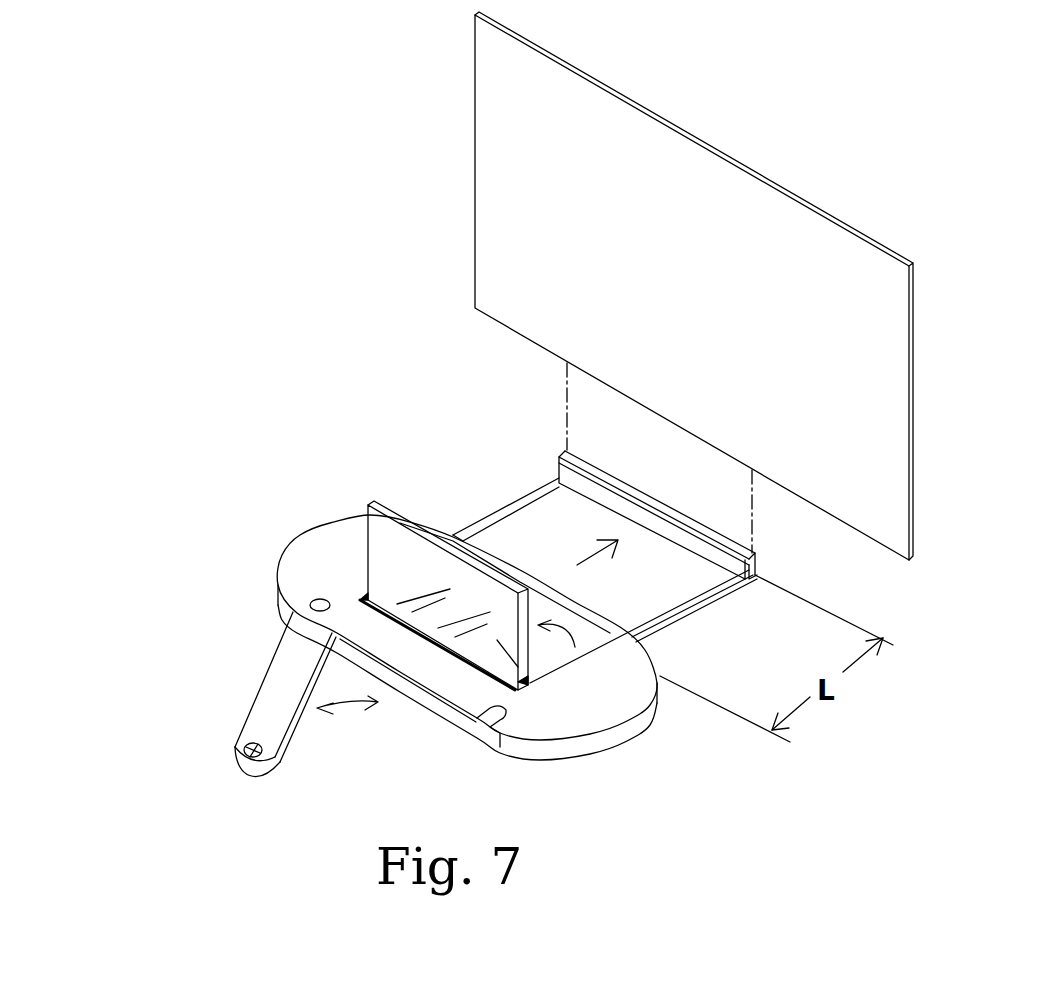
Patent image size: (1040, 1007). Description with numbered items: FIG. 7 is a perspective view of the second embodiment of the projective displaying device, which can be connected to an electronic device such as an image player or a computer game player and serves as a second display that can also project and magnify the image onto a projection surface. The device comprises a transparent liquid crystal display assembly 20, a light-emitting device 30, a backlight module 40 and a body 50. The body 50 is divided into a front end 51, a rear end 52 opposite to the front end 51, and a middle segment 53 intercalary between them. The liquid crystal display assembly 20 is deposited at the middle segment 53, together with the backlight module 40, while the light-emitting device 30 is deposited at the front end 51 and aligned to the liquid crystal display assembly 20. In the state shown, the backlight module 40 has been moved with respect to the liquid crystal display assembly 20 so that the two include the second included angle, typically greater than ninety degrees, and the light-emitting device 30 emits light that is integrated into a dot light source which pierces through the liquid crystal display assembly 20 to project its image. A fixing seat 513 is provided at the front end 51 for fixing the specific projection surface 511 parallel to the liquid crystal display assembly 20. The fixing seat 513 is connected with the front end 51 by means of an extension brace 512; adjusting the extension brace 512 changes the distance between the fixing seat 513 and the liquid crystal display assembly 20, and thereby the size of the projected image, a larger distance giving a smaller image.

The transparent liquid crystal display assembly 20 is at (553, 650).
The light-emitting device 30 is at (263, 753).
The backlight module 40 is at (660, 674).
The body 50 is at (452, 417).
The front end 51 is at (490, 553).
The projection surface 511 is at (837, 407).
The extension brace 512 is at (687, 610).
The fixing seat 513 is at (757, 573).
The rear end 52 is at (298, 615).
The middle segment 53 is at (360, 593).